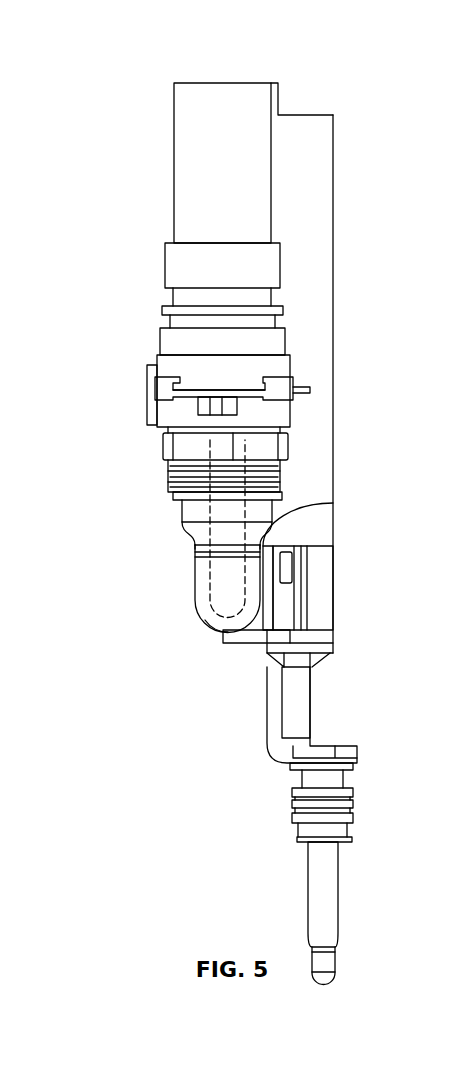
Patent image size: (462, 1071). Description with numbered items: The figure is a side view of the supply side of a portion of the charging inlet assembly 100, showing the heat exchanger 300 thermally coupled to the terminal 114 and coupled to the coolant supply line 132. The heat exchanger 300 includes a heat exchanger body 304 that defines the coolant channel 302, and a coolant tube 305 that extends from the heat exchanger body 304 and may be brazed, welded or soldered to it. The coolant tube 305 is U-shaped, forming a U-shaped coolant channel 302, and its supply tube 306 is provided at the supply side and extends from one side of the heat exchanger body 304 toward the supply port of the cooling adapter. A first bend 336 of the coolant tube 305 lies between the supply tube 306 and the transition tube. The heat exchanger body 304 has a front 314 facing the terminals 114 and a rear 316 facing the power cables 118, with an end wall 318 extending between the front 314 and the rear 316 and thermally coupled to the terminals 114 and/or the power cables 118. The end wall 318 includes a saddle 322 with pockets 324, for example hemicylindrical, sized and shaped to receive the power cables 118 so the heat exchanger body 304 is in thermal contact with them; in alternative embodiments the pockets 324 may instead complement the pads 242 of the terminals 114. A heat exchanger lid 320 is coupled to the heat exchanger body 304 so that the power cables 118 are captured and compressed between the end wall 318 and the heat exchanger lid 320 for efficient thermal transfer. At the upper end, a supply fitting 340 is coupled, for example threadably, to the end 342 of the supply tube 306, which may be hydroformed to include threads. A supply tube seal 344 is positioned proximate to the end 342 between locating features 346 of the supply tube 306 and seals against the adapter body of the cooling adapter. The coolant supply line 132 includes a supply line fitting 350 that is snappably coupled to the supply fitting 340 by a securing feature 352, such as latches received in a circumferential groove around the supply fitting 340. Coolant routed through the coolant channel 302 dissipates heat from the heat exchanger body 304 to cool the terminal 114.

The charging inlet assembly 100 is at (145, 113).
The coolant supply line 132 is at (198, 165).
The power cable 118 is at (320, 182).
The supply line fitting 350 is at (157, 352).
The securing feature 352 is at (178, 412).
The supply fitting 340 is at (168, 447).
The end of the supply tube 342 is at (173, 467).
The supply tube seal 344 is at (175, 490).
The locating features 346 is at (170, 496).
The supply tube 306 is at (202, 543).
The coolant tube 305 is at (200, 572).
The coolant channel 302 is at (223, 595).
The first bend 336 is at (213, 630).
The heat exchanger body 304 is at (258, 630).
The rear 316 is at (333, 504).
The heat exchanger lid 320 is at (328, 587).
The pockets 324 is at (293, 548).
The saddle 322 is at (267, 603).
The end wall 318 is at (293, 637).
The front 314 is at (257, 647).
The pads 242 is at (275, 717).
The terminal 114 is at (327, 893).
The heat exchanger 300 is at (122, 578).